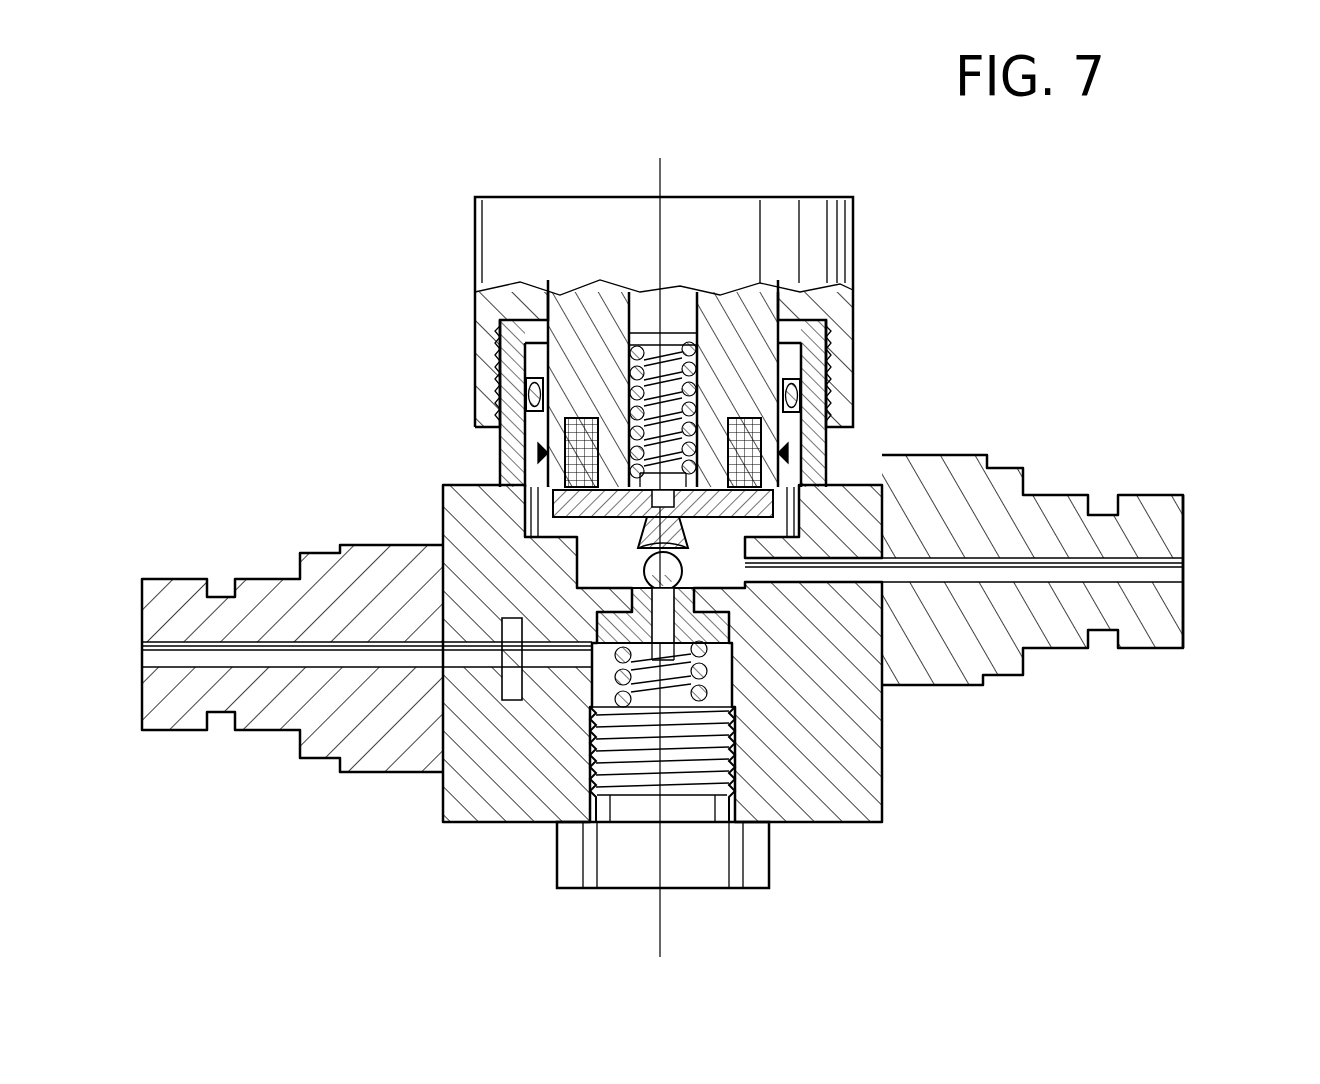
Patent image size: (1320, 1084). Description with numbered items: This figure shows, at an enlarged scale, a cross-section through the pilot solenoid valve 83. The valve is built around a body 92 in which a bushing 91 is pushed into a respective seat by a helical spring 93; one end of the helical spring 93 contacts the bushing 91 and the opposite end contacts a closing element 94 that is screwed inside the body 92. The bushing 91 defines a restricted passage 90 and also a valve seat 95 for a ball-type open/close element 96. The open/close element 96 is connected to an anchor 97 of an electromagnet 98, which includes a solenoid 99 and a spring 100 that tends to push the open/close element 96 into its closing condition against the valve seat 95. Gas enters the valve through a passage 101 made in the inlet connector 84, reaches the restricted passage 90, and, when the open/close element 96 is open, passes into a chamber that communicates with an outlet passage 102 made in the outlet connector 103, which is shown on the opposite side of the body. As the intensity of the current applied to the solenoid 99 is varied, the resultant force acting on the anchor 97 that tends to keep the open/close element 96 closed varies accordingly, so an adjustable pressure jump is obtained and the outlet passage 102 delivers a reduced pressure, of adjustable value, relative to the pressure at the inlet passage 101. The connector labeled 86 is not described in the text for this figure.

The pilot solenoid valve 83 is at (950, 226).
The inlet connector 84 is at (166, 722).
The outlet fitting 86 is at (1005, 622).
The restricted passage 90 is at (728, 632).
The bushing 91 is at (883, 723).
The body 92 is at (862, 823).
The helical spring 93 is at (640, 655).
The closing element 94 is at (752, 890).
The valve seat 95 is at (600, 612).
The ball-type open/close element 96 is at (640, 585).
The anchor 97 is at (515, 485).
The electromagnet 98 is at (862, 336).
The solenoid 99 is at (587, 400).
The spring 100 is at (545, 318).
The passage 101 is at (256, 667).
The outlet passage 102 is at (1140, 575).
The outlet connector 103 is at (1168, 633).